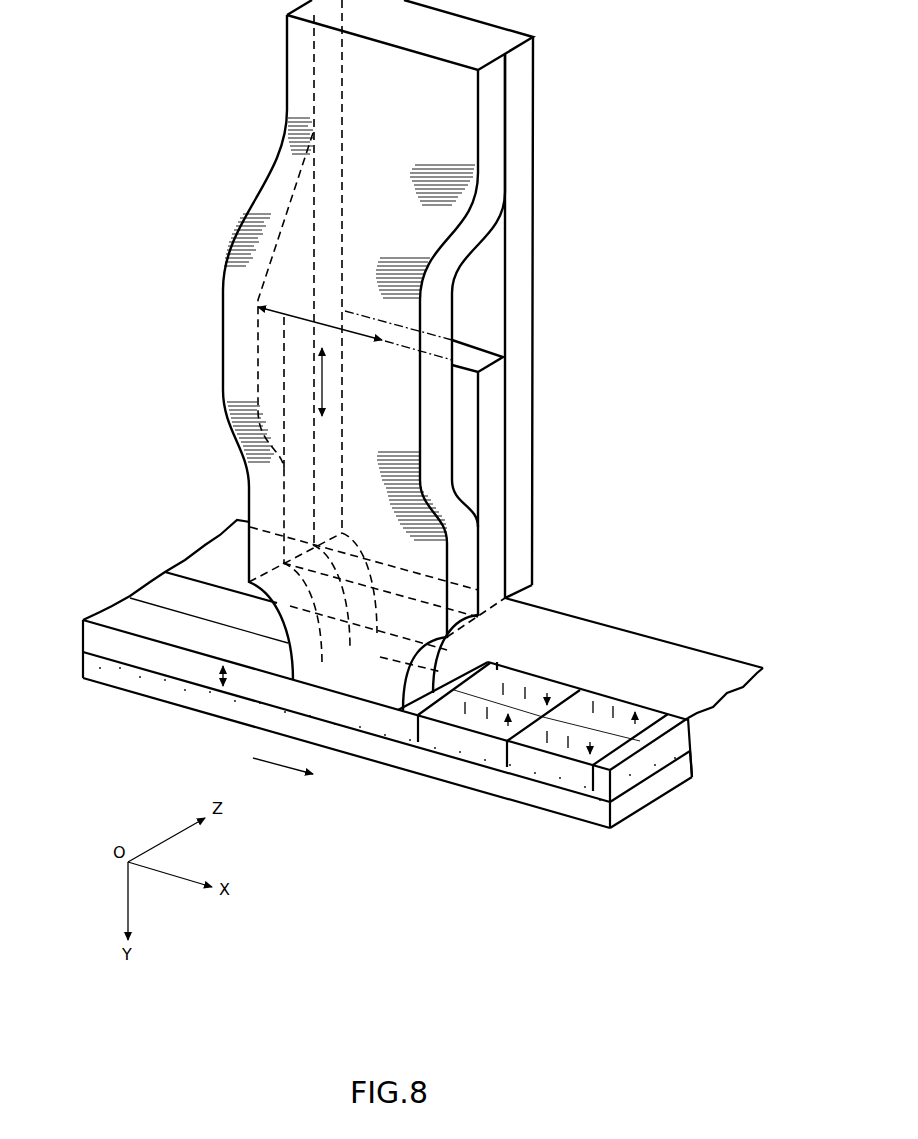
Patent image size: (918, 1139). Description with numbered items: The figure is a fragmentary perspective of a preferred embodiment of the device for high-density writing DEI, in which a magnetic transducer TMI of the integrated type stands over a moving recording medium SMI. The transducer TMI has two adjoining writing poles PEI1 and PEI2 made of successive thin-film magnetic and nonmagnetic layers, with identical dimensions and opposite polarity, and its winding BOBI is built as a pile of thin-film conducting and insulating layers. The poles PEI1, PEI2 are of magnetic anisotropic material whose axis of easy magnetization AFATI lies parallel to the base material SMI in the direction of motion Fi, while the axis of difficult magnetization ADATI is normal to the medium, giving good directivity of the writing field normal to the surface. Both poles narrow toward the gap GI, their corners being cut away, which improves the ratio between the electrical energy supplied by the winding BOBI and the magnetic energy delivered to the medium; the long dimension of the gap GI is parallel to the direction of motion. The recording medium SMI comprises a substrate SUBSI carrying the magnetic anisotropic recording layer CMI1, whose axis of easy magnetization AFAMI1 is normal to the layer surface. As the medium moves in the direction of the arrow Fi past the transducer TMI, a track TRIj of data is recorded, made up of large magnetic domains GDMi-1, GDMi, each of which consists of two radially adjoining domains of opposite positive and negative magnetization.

The magnetic transducer TMI is at (273, 82).
The first writing pole PEI1 is at (518, 243).
The second writing pole PEI2 is at (433, 427).
The winding BOBI is at (488, 417).
The device for high-density writing DEI is at (106, 586).
The axis of easy magnetization of the writing poles AFATI is at (355, 321).
The axis of difficult magnetization of the writing poles ADATI is at (288, 382).
The track of data TRIj is at (218, 636).
The recording medium SMI is at (697, 668).
The large magnetic domain GDMi is at (578, 668).
The preceding large magnetic domain GDMi-1 is at (668, 700).
The magnetic anisotropic recording layer CMI1 is at (122, 643).
The axis of easy magnetization of the recording layer AFAMI1 is at (223, 690).
The direction of motion arrow Fi is at (283, 754).
The gap GI is at (388, 677).
The substrate SUBSI is at (568, 812).